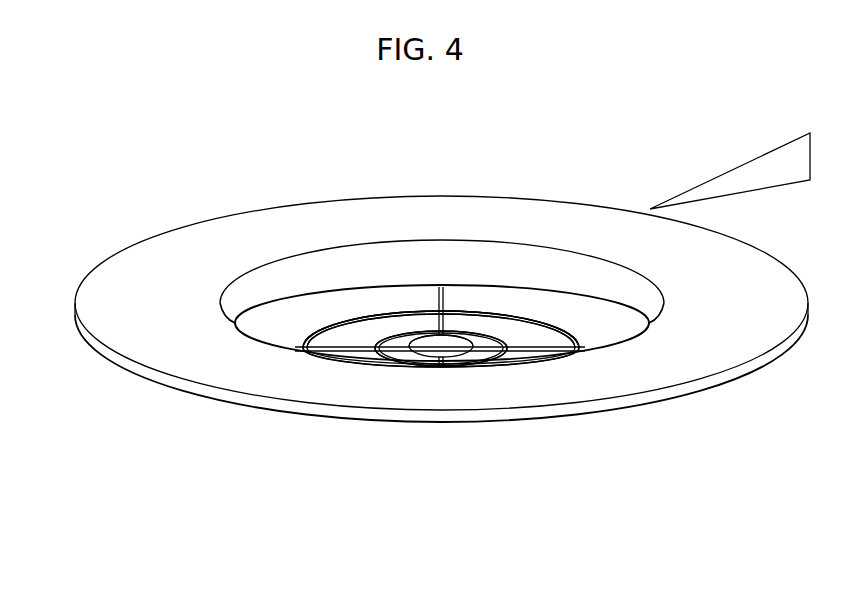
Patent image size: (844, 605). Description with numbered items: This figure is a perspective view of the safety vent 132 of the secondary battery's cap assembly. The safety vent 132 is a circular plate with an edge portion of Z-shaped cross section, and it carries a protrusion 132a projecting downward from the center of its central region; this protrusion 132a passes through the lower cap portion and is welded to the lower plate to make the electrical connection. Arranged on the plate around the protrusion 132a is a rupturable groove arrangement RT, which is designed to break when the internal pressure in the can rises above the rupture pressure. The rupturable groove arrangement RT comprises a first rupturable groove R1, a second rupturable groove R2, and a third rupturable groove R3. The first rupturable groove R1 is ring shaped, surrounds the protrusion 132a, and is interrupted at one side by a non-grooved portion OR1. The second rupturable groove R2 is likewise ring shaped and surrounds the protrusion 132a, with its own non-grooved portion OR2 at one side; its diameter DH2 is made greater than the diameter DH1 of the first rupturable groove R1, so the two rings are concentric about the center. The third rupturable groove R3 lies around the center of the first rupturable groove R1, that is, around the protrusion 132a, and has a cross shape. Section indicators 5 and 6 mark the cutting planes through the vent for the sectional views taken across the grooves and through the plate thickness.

The safety vent 132 is at (63, 203).
The protrusion 132a is at (428, 337).
The non-grooved portion OR1 is at (403, 332).
The non-grooved portion OR2 is at (362, 316).
The first rupturable groove R1 is at (466, 333).
The second rupturable groove R2 is at (528, 322).
The third rupturable groove R3 is at (435, 334).
The rupturable groove arrangement RT is at (475, 219).
The diameter of the first rupturable groove DH1 is at (507, 350).
The diameter of the second rupturable groove DH2 is at (578, 350).
The section line 5 is at (810, 180).
The section line 6 is at (288, 201).